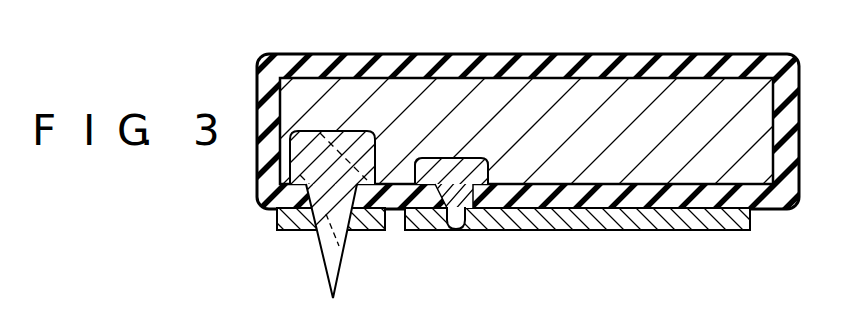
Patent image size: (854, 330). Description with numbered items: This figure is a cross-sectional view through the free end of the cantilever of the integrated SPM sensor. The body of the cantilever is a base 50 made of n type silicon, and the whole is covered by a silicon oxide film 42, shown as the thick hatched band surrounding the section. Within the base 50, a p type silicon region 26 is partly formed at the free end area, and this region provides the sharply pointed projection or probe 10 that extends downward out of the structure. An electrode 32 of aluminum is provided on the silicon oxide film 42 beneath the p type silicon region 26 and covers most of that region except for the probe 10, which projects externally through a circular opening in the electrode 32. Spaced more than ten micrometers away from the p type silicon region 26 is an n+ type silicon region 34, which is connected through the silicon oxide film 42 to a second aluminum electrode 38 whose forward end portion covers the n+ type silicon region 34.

The probe 10 is at (343, 243).
The p type silicon region 26 is at (346, 131).
The electrode 32 is at (289, 226).
The n+ type silicon region 34 is at (465, 158).
The electrode 38 is at (590, 226).
The silicon oxide film 42 is at (668, 60).
The base 50 is at (555, 88).